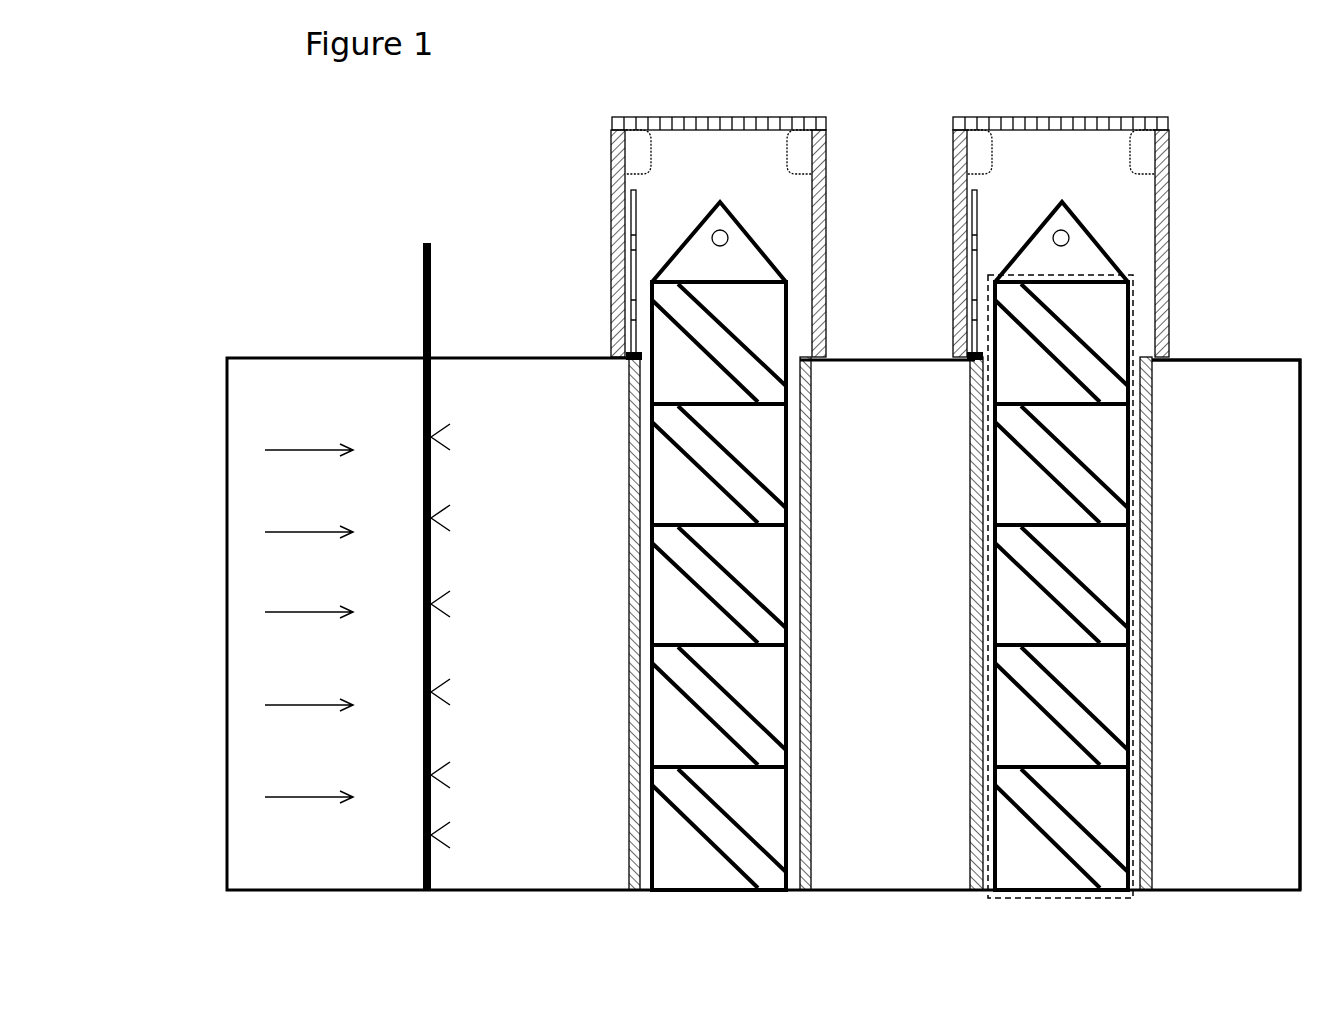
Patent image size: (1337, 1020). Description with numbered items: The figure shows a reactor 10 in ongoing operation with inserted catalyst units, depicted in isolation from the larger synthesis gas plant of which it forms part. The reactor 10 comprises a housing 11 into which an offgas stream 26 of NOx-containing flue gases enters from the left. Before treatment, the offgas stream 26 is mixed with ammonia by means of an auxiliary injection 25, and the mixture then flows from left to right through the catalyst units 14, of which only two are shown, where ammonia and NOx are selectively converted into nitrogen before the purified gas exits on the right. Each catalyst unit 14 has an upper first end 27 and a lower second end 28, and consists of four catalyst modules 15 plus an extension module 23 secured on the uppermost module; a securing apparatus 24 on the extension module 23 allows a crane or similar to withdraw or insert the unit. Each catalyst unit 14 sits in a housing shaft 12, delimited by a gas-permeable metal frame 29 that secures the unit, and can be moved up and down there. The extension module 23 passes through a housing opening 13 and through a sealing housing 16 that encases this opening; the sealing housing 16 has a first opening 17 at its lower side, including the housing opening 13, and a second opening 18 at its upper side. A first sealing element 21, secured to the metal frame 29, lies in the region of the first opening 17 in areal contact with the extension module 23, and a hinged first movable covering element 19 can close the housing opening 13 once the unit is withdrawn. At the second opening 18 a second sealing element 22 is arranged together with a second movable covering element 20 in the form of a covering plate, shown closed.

The reactor 10 is at (222, 178).
The housing 11 is at (290, 358).
The housing shaft 12 is at (630, 400).
The housing opening 13 is at (640, 352).
The catalyst unit 14 is at (1148, 520).
The catalyst module 15 is at (688, 845).
The sealing housing 16 is at (612, 248).
The first opening 17 is at (806, 352).
The second opening 18 is at (775, 150).
The first movable covering element 19 is at (630, 212).
The second movable covering element 20 is at (795, 160).
The first sealing element 21 is at (815, 388).
The second sealing element 22 is at (835, 185).
The extension module 23 is at (768, 300).
The securing apparatus 24 is at (745, 262).
The auxiliary injection 25 is at (423, 265).
The offgas stream 26 is at (290, 448).
The first end 27 is at (1160, 215).
The second end 28 is at (1093, 890).
The metal frame 29 is at (645, 470).